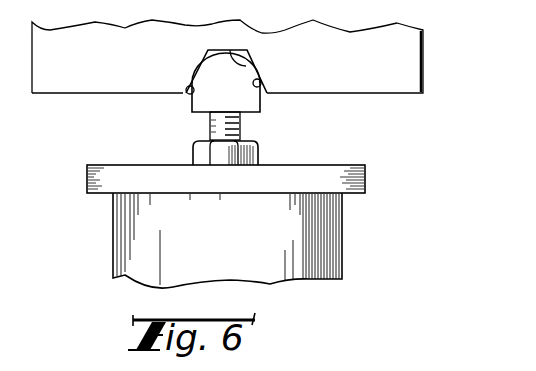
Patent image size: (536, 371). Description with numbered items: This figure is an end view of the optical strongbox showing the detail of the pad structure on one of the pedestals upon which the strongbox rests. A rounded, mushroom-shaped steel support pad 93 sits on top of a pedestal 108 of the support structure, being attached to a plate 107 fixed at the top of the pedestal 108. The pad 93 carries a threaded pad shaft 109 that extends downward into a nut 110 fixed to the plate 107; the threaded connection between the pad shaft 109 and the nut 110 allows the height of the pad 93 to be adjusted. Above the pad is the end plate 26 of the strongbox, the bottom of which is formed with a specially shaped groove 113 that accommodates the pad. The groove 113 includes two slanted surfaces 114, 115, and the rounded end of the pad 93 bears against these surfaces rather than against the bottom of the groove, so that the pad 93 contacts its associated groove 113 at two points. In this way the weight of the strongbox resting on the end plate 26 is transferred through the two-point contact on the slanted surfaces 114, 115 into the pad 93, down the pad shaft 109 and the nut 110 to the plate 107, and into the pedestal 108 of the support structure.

The end plate 26 is at (423, 46).
The support pad 93 is at (207, 77).
The plate 107 is at (365, 170).
The pedestal 108 is at (342, 216).
The pad shaft 109 is at (210, 128).
The nut 110 is at (258, 149).
The groove 113 is at (255, 60).
The slanted surface 114 is at (264, 87).
The slanted surface 115 is at (188, 93).